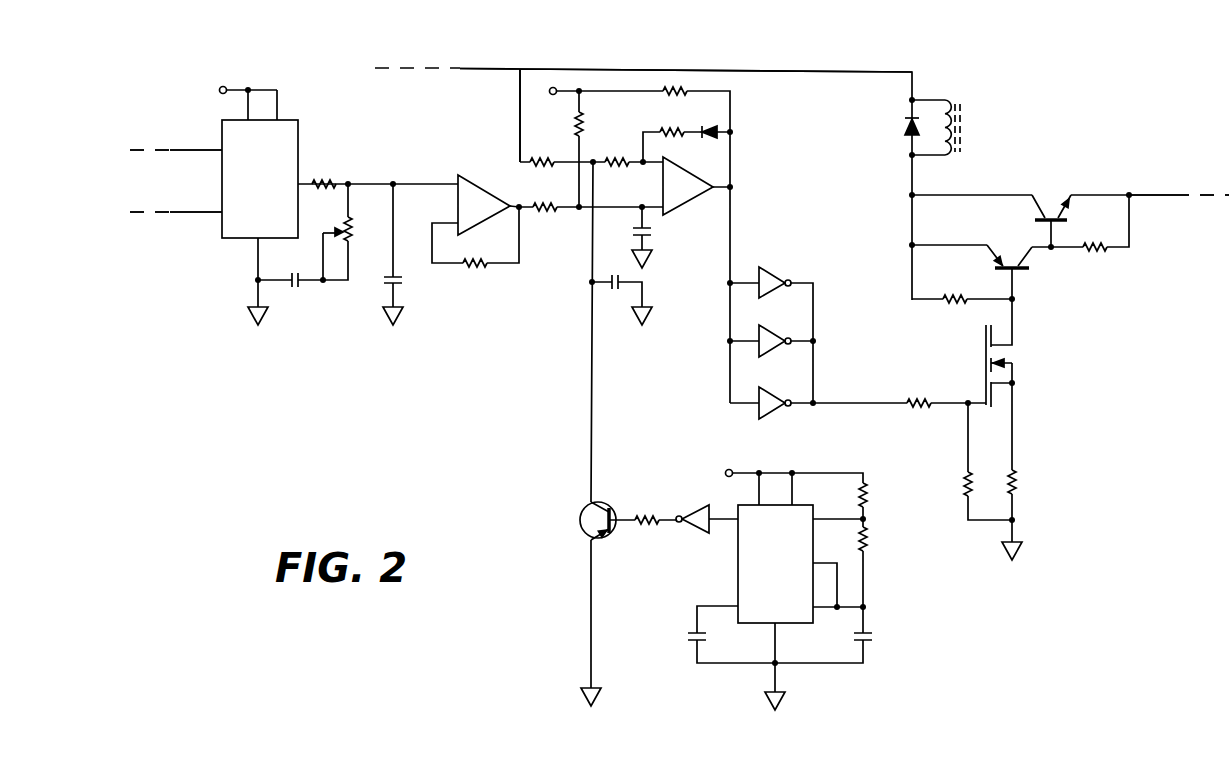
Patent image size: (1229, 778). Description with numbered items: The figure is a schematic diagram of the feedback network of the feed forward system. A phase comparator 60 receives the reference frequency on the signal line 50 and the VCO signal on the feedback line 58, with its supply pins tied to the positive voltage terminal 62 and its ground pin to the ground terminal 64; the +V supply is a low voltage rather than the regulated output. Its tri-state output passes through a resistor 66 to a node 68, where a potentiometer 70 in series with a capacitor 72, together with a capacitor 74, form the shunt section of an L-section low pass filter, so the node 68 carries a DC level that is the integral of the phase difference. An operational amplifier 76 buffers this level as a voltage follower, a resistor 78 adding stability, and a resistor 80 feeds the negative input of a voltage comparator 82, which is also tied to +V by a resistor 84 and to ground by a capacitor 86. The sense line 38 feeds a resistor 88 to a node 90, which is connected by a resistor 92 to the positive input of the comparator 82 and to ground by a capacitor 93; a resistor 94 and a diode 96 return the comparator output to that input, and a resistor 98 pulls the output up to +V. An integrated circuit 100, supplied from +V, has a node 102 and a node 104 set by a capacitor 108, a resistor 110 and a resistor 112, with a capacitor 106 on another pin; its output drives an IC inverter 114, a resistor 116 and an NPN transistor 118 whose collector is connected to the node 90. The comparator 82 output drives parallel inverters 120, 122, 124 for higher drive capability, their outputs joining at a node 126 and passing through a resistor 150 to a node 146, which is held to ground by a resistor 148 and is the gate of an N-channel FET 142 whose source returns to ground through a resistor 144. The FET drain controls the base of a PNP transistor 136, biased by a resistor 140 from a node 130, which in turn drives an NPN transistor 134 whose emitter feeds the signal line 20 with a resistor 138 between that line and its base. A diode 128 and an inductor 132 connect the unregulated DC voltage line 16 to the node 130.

The unregulated DC voltage line 16 is at (773, 71).
The signal line 20 is at (1155, 195).
The sense line 38 is at (519, 98).
The signal line 50 is at (178, 149).
The feedback line 58 is at (182, 211).
The phase comparator 60 is at (299, 127).
The positive voltage terminal 62 is at (228, 87).
The ground terminal 64 is at (256, 295).
The resistor 66 is at (322, 178).
The node 68 is at (350, 188).
The potentiometer 70 is at (352, 238).
The capacitor 72 is at (300, 290).
The capacitor 74 is at (404, 285).
The operational amplifier 76 is at (477, 184).
The resistor 78 is at (478, 260).
The resistor 80 is at (542, 196).
The voltage comparator 82 is at (690, 200).
The resistor 84 is at (583, 123).
The capacitor 86 is at (653, 232).
The resistor 88 is at (542, 155).
The node 90 is at (595, 170).
The resistor 92 is at (625, 168).
The capacitor 93 is at (611, 270).
The resistor 94 is at (659, 126).
The diode 96 is at (703, 140).
The resistor 98 is at (660, 94).
The integrated circuit 100 is at (738, 565).
The node 102 is at (871, 522).
The node 104 is at (870, 612).
The capacitor 106 is at (692, 642).
The capacitor 108 is at (872, 645).
The resistor 110 is at (872, 552).
The resistor 112 is at (872, 497).
The IC inverter 114 is at (693, 534).
The resistor 116 is at (645, 513).
The NPN transistor 118 is at (578, 523).
The inverter 120 is at (774, 272).
The inverter 122 is at (770, 331).
The inverter 124 is at (770, 393).
The node 126 is at (811, 408).
The diode 128 is at (900, 133).
The node 130 is at (905, 196).
The inductor 132 is at (965, 140).
The NPN transistor 134 is at (1054, 198).
The PNP transistor 136 is at (1004, 254).
The resistor 138 is at (1098, 254).
The resistor 140 is at (958, 305).
The N-channel FET 142 is at (984, 362).
The resistor 144 is at (1020, 481).
The node 146 is at (966, 400).
The resistor 148 is at (960, 481).
The resistor 150 is at (905, 410).